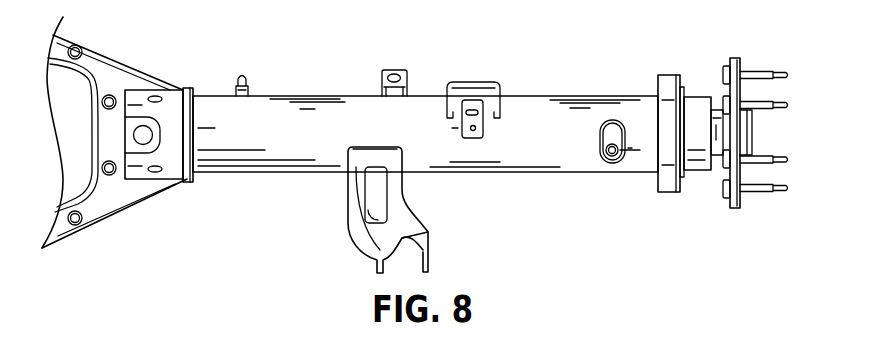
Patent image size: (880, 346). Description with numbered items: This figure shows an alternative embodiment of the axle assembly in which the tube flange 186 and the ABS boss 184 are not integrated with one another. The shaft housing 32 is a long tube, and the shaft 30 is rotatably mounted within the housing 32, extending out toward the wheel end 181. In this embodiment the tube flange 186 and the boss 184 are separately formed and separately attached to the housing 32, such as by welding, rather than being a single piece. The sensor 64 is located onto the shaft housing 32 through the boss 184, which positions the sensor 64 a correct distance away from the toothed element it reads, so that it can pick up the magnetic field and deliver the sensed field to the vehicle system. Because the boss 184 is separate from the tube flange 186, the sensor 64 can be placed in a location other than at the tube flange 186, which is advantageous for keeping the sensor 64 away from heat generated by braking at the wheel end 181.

The shaft housing 32 is at (523, 95).
The sensor 64 is at (614, 130).
The ABS boss 184 is at (607, 164).
The tube flange 186 is at (671, 75).
The shaft 30 is at (722, 110).
The wheel end 181 is at (735, 58).